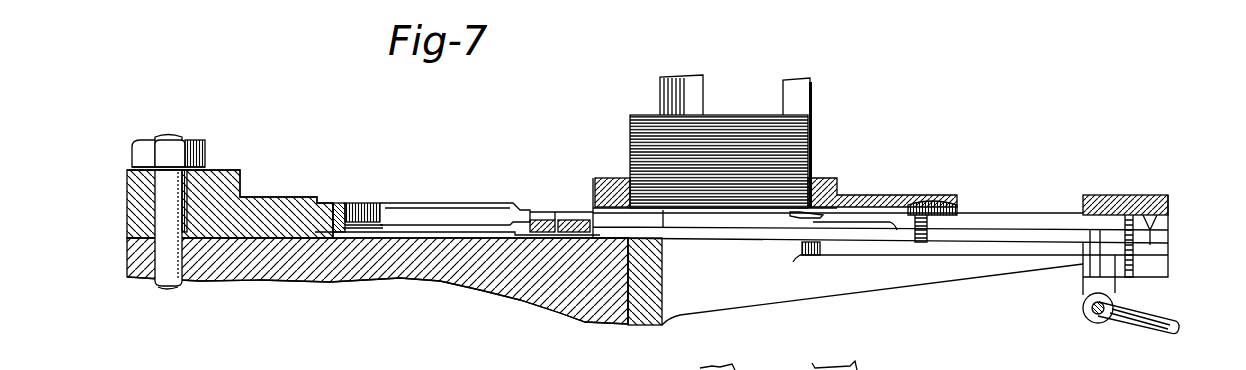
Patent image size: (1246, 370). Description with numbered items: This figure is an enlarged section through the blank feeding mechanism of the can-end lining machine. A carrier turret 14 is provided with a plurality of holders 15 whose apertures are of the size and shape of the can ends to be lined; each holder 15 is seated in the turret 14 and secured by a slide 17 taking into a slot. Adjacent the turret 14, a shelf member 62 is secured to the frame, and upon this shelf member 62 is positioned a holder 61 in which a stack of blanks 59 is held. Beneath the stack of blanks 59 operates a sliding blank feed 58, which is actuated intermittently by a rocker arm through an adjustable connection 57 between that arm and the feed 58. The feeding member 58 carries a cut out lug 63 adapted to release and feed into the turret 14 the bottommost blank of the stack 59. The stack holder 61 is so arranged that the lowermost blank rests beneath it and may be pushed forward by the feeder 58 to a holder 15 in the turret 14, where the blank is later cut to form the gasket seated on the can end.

The carrier turret 14 is at (268, 207).
The holder 15 is at (432, 212).
The slide 17 is at (575, 215).
The stack of blanks 59 is at (752, 118).
The holder 61 is at (812, 97).
The sliding blank feed 58 is at (1015, 222).
The cut out lug 63 is at (805, 215).
The shelf member 62 is at (890, 280).
The adjustable connection 57 is at (1140, 318).